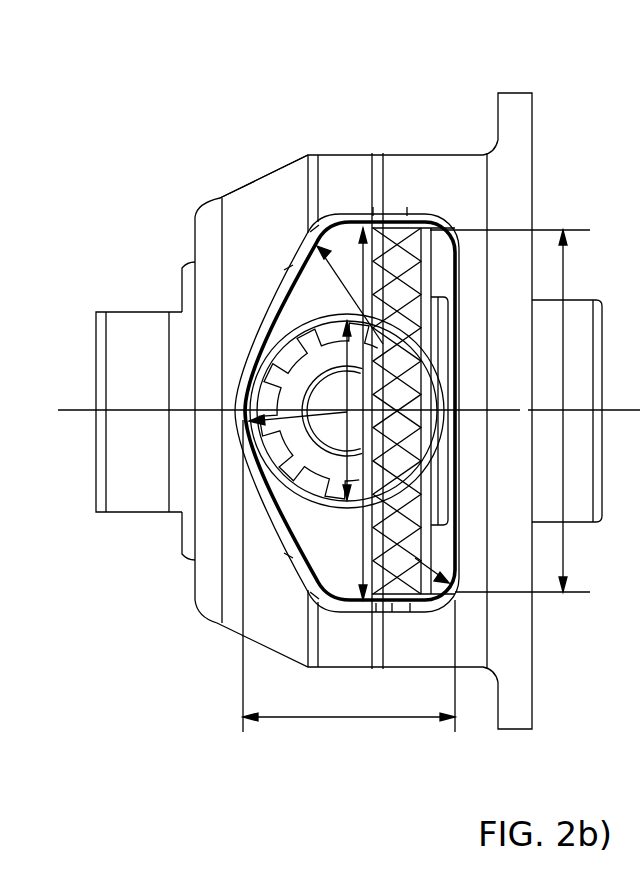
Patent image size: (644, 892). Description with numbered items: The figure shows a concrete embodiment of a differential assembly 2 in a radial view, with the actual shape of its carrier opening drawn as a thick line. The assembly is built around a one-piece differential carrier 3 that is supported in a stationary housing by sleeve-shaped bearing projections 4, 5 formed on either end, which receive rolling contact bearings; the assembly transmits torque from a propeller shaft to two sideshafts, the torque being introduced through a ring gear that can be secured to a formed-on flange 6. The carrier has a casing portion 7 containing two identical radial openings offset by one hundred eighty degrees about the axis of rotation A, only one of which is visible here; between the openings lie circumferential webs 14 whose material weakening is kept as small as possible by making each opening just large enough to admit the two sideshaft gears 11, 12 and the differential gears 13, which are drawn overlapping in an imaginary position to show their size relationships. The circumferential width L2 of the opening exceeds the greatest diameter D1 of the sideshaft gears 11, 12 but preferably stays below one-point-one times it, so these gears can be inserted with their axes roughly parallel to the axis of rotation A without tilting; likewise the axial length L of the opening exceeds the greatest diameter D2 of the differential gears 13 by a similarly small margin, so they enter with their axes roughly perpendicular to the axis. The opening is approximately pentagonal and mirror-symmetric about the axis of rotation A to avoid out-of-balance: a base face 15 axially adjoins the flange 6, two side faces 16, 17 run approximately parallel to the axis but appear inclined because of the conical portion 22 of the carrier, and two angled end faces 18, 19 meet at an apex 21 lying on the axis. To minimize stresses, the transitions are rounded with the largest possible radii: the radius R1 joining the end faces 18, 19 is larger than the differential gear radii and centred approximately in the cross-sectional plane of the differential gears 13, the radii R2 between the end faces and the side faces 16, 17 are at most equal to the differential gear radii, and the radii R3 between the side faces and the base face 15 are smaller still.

The differential assembly 2 is at (254, 111).
The differential carrier 3 is at (204, 215).
The bearing projection 4 is at (580, 323).
The bearing projection 5 is at (123, 322).
The flange 6 is at (525, 116).
The casing portion 7 is at (438, 150).
The sideshaft gear 11 is at (412, 255).
The sideshaft gear 12 is at (392, 233).
The differential gear 13 is at (308, 463).
The web 14 is at (335, 165).
The base face 15 is at (457, 505).
The side face 16 is at (352, 612).
The side face 17 is at (360, 212).
The end face 18 is at (280, 540).
The end face 19 is at (272, 298).
The apex 21 is at (235, 412).
The conical portion 22 is at (257, 185).
The axis of rotation A is at (617, 407).
The greatest diameter of the sideshaft gears D1 is at (518, 411).
The greatest diameter of the differential gears D2 is at (331, 410).
The length L is at (349, 576).
The width of the opening L2 is at (347, 414).
The radius connecting the end faces R1 is at (298, 435).
The radius between end face and side face R2 is at (347, 295).
The radius between side face and base face R3 is at (435, 559).